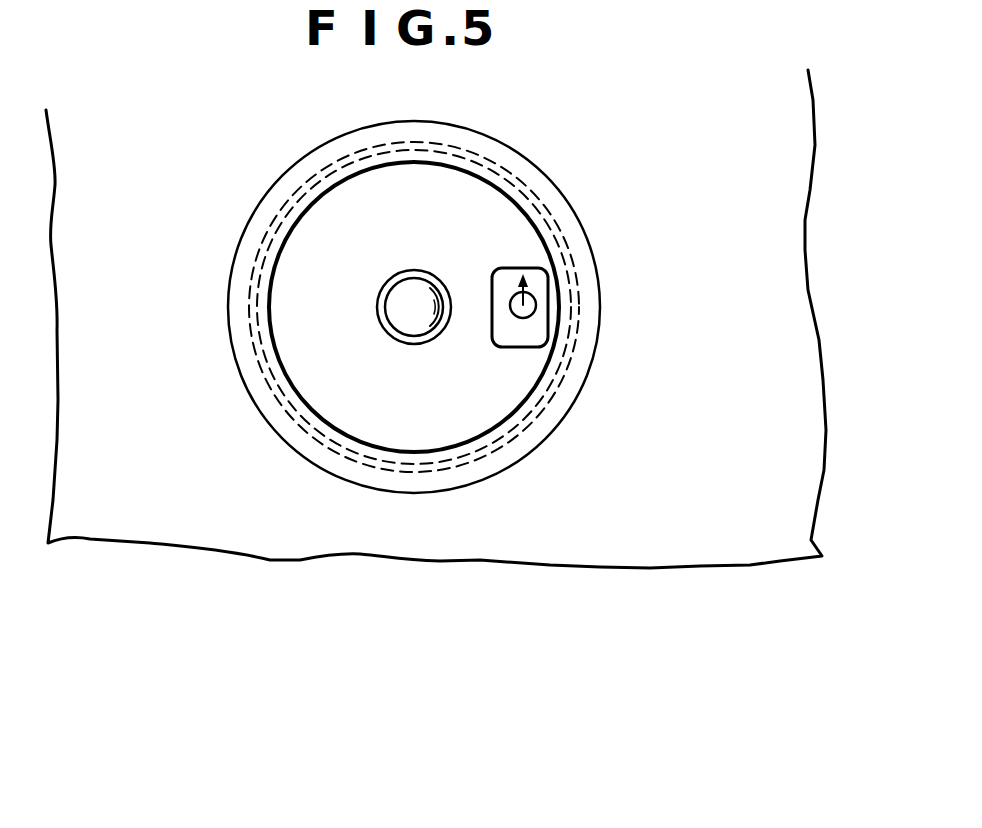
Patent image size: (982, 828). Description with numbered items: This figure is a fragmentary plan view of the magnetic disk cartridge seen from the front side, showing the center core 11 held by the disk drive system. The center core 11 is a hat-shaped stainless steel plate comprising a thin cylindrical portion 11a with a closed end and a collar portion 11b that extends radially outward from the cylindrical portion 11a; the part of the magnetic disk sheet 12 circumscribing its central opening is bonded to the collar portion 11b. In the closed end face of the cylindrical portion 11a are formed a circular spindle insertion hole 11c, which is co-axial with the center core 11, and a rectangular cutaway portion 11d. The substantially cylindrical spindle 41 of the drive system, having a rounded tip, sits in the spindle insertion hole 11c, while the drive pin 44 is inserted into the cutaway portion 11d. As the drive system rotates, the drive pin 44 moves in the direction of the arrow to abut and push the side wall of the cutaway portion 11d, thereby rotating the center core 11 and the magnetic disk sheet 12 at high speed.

The center core 11 is at (481, 126).
The cylindrical portion 11a is at (487, 206).
The collar portion 11b is at (567, 218).
The spindle insertion hole 11c is at (395, 330).
The cutaway portion 11d is at (497, 346).
The magnetic disk sheet 12 is at (652, 547).
The spindle 41 is at (408, 286).
The drive pin 44 is at (536, 305).